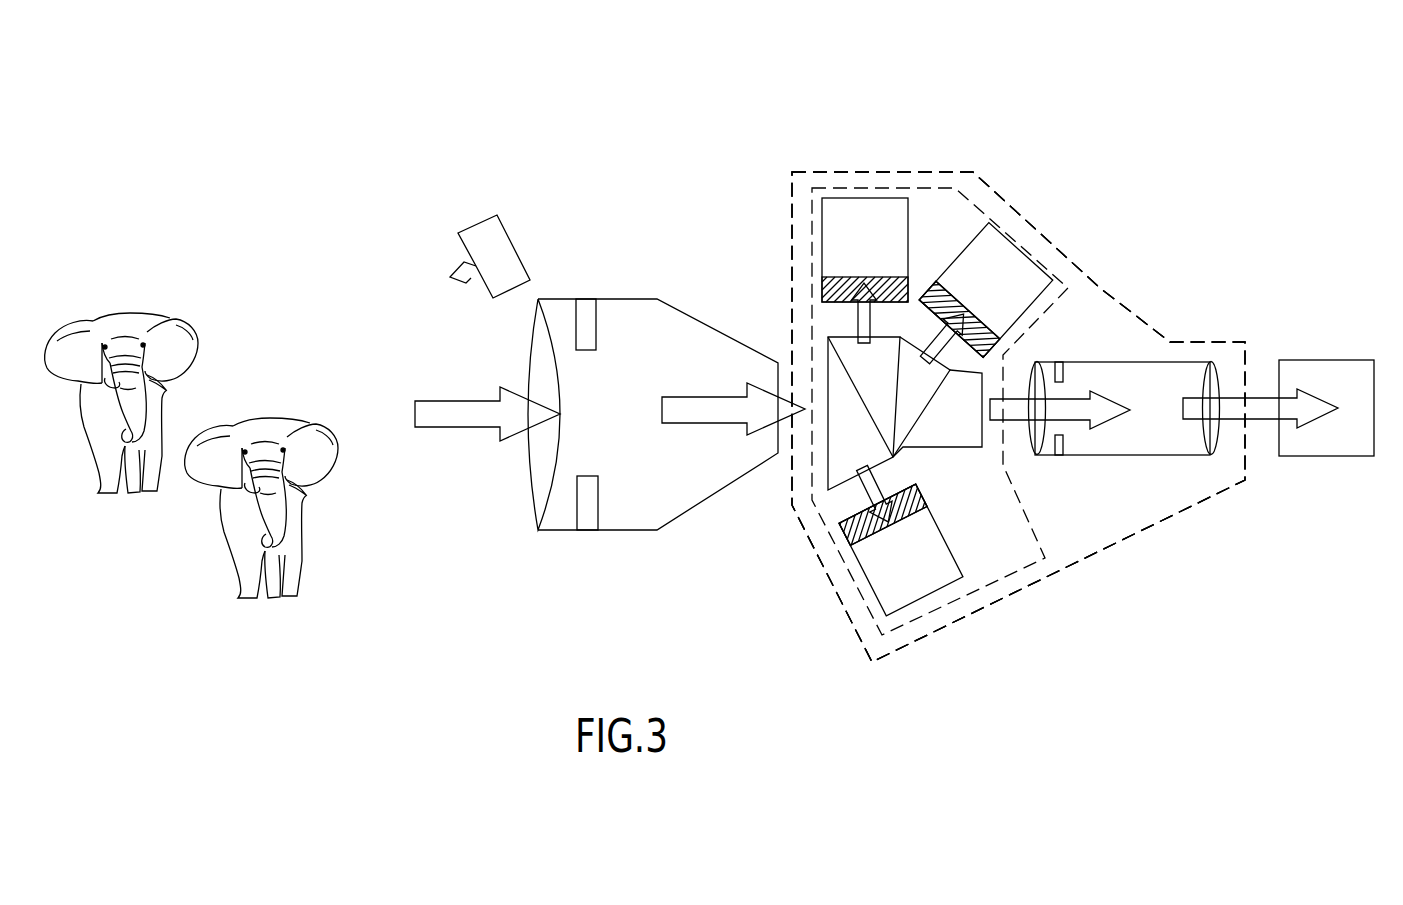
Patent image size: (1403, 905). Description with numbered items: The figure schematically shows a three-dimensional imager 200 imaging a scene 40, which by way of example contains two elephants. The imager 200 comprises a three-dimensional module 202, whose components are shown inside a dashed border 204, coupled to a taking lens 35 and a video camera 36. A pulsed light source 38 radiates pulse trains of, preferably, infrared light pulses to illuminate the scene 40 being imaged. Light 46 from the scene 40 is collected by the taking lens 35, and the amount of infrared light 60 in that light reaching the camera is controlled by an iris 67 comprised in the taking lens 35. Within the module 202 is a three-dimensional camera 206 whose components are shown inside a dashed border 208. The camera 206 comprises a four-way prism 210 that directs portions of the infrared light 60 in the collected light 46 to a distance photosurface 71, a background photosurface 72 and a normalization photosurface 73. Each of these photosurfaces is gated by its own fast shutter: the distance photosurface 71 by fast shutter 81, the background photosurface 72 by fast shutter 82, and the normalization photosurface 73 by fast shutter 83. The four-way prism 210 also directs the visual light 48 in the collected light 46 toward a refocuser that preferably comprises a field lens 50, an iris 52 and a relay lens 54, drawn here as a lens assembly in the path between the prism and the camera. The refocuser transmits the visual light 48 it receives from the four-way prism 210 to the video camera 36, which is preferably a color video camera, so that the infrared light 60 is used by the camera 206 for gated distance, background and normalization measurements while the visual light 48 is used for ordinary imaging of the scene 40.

The 3D imager 200 is at (287, 244).
The scene 40 is at (164, 582).
The pulsed light source 38 is at (497, 269).
The light 46 is at (455, 403).
The taking lens system 35 is at (653, 469).
The iris 67 is at (582, 350).
The 3D module 202 is at (1214, 101).
The dashed border 204 is at (1043, 227).
The 3D camera 206 is at (970, 183).
The dashed border 208 is at (905, 186).
The four-way prism 210 is at (832, 452).
The normalization photosurface 73 is at (886, 210).
The fast shutter 83 is at (820, 324).
The background photosurface 72 is at (1040, 262).
The fast shutter 82 is at (1000, 338).
The distance photosurface 71 is at (883, 577).
The fast shutter 81 is at (850, 540).
The IR light 60 is at (945, 340).
The iris 52 is at (1064, 448).
The field lens 50 is at (1034, 378).
The relay lens 54 is at (1211, 365).
The visual light 48 is at (1015, 418).
The video camera 36 is at (1331, 390).